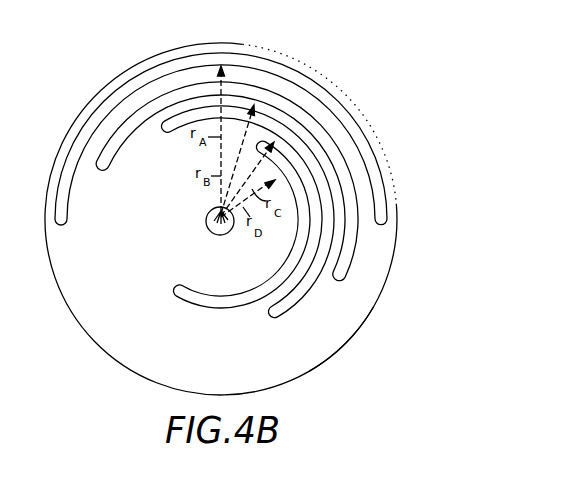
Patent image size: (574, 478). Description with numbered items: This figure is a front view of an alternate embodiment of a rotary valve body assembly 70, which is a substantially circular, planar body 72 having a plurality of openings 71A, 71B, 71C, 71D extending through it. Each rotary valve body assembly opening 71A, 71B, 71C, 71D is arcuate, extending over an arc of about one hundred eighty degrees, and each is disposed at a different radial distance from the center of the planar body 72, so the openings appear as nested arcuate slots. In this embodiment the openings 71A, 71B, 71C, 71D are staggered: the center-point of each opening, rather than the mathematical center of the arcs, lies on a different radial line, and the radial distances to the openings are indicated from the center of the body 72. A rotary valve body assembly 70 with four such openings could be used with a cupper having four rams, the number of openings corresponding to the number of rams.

The rotary valve body assembly 70 is at (96, 322).
The planar body 72 is at (330, 341).
The rotary valve body assembly opening 71A is at (141, 80).
The rotary valve body assembly opening 71B is at (113, 148).
The rotary valve body assembly opening 71C is at (173, 130).
The rotary valve body assembly opening 71D is at (263, 291).